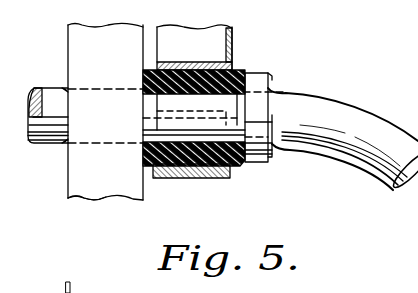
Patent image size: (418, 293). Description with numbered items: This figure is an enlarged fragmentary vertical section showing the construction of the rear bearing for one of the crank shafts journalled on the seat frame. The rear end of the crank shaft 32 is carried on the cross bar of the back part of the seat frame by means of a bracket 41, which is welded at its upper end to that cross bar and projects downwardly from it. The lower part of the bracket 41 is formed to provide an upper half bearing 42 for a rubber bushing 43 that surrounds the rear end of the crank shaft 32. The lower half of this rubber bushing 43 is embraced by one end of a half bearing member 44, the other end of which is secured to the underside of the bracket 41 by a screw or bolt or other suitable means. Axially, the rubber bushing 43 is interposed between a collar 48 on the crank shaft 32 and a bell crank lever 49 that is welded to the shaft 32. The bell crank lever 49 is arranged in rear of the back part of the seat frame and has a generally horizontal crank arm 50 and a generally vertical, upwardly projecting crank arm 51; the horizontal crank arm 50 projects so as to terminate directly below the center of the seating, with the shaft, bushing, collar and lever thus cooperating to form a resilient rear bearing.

The crank shaft 32 is at (363, 113).
The bracket 41 is at (234, 33).
The upper half bearing 42 is at (213, 64).
The rubber bushing 43 is at (238, 166).
The half bearing member 44 is at (200, 179).
The collar 48 is at (263, 81).
The bell crank lever 49 is at (80, 52).
The horizontal crank arm 50 is at (72, 200).
The vertical crank arm 51 is at (105, 111).